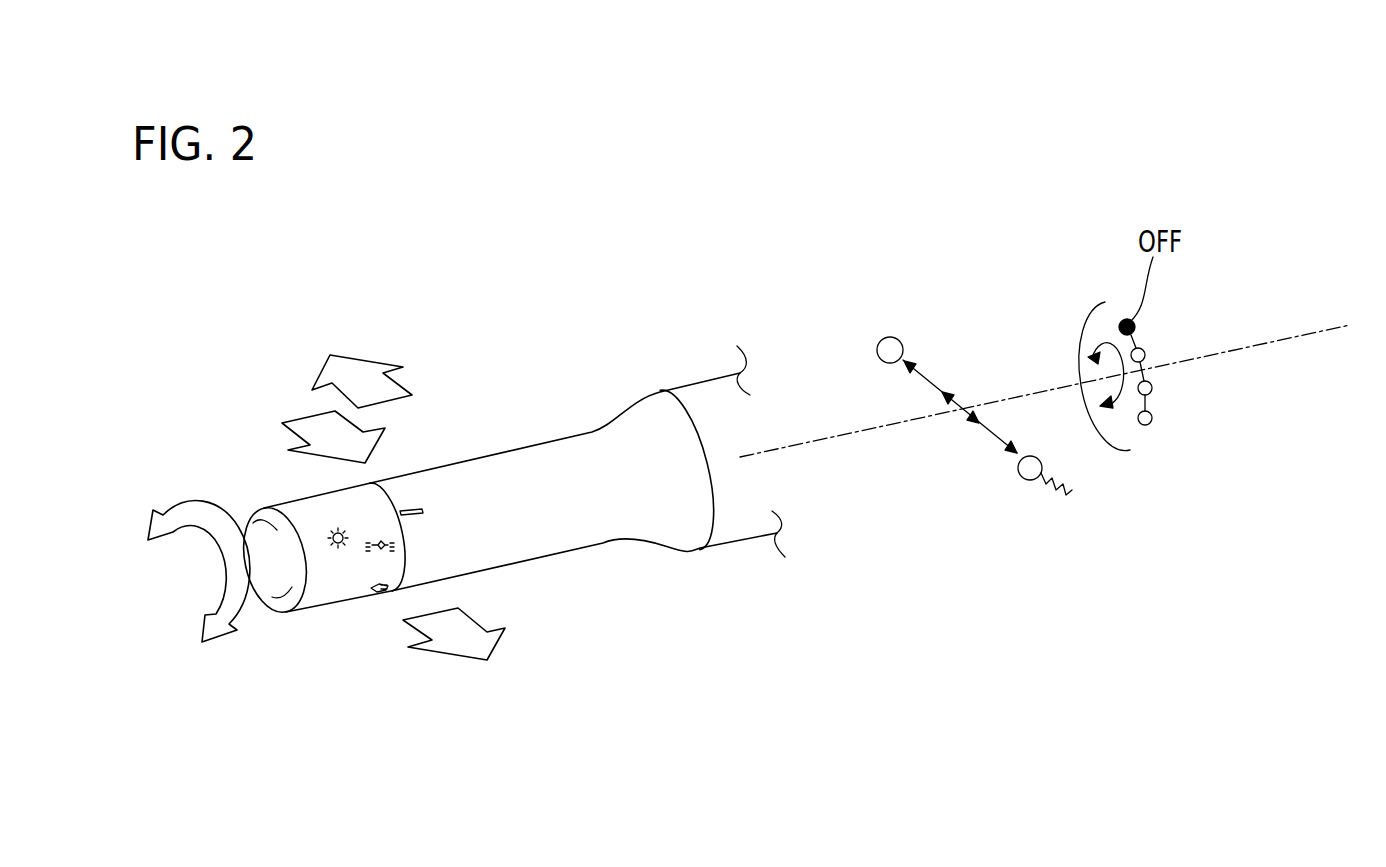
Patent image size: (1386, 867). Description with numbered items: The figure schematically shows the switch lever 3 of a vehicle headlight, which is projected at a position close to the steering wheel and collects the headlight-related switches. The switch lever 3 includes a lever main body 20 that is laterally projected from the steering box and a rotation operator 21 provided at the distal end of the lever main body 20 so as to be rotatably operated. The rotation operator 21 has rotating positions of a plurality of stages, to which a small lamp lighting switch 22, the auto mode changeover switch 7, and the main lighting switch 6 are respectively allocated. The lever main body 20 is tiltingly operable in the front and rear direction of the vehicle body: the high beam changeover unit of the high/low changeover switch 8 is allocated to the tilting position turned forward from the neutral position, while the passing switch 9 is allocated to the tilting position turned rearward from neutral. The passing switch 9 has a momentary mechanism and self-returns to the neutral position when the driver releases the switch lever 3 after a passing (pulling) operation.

The switch lever 3 is at (510, 493).
The lever main body 20 is at (557, 540).
The rotation operator 21 is at (326, 592).
The high/low changeover switch 8 is at (884, 341).
The passing switch 9 is at (1030, 480).
The small lamp lighting switch 22 is at (1148, 350).
The auto mode changeover switch 7 is at (1153, 387).
The main lighting switch 6 is at (1153, 418).